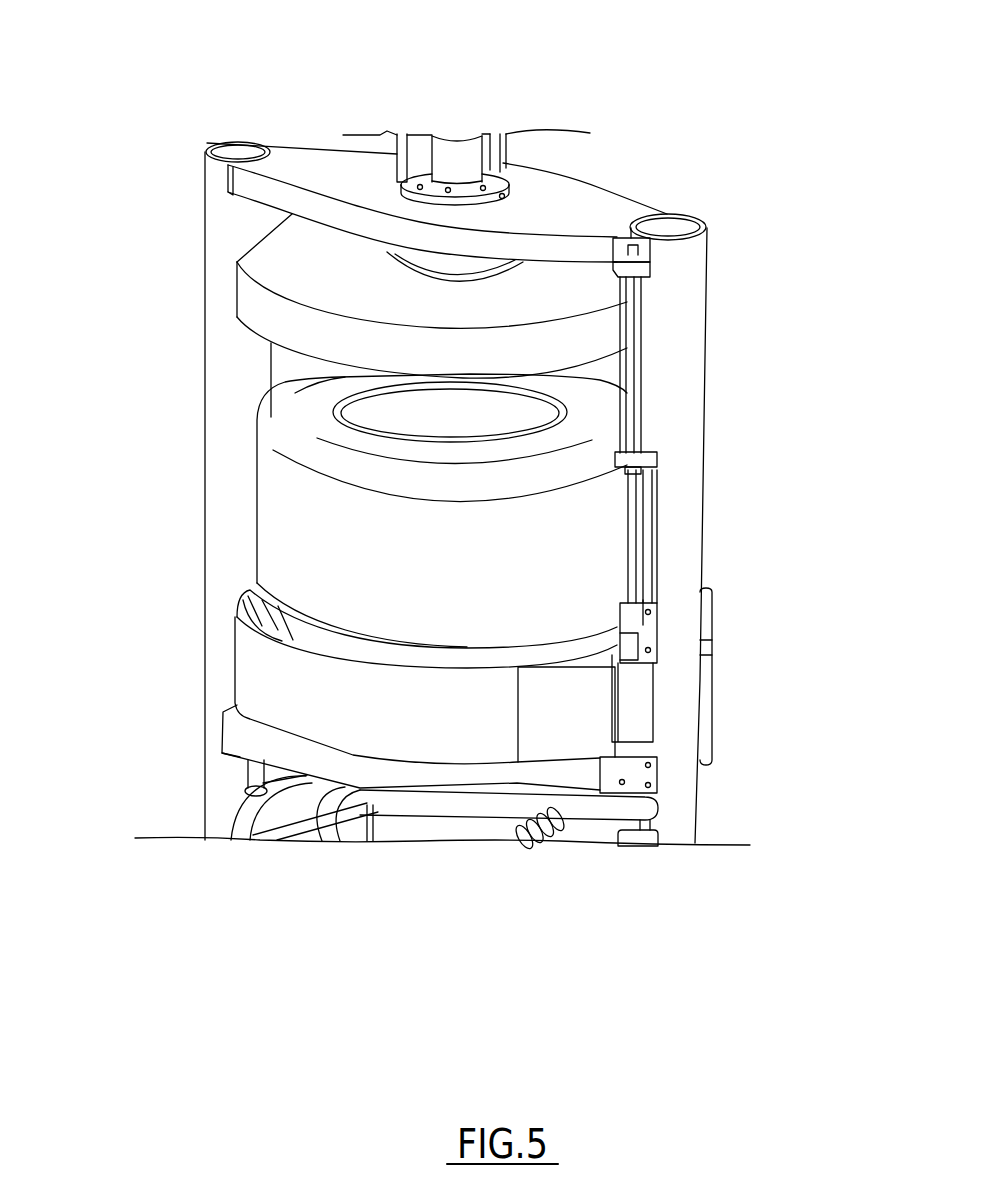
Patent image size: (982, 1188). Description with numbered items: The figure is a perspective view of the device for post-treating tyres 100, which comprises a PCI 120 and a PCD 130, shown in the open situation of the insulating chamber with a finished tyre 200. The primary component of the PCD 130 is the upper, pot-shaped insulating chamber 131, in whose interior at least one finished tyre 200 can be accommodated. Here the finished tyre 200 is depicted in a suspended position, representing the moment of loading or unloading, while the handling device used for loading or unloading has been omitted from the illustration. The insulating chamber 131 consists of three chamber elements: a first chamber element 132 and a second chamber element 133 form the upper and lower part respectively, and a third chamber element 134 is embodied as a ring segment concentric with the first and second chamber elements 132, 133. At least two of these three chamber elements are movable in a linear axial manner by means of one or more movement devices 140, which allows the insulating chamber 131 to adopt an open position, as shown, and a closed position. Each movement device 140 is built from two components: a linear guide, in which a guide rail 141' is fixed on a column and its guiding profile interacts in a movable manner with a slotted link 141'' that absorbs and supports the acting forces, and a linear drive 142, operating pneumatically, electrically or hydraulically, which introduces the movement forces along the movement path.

The device for post-treating tyres 100 is at (256, 100).
The PCI 120 is at (639, 147).
The PCD 130 is at (415, 440).
The insulating chamber 131 is at (161, 206).
The first chamber element 132 is at (258, 316).
The second chamber element 133 is at (262, 627).
The third chamber element 134 is at (263, 657).
The movement device 140 is at (748, 460).
The guide rail 141' is at (749, 591).
The slotted link 141'' is at (734, 685).
The linear drive 142 is at (630, 513).
The finished tyre 200 is at (295, 503).